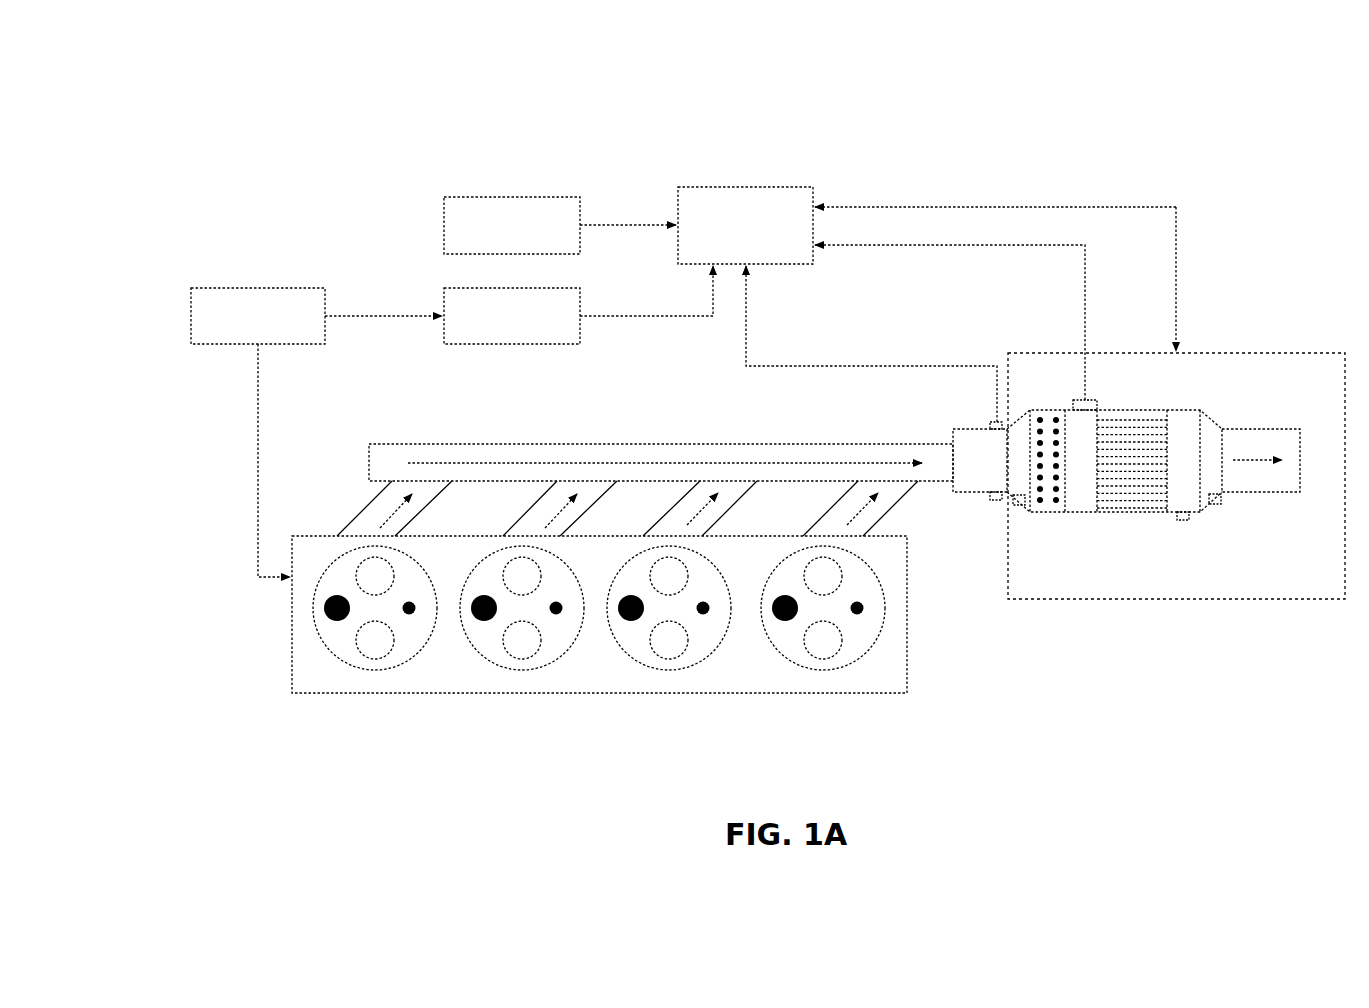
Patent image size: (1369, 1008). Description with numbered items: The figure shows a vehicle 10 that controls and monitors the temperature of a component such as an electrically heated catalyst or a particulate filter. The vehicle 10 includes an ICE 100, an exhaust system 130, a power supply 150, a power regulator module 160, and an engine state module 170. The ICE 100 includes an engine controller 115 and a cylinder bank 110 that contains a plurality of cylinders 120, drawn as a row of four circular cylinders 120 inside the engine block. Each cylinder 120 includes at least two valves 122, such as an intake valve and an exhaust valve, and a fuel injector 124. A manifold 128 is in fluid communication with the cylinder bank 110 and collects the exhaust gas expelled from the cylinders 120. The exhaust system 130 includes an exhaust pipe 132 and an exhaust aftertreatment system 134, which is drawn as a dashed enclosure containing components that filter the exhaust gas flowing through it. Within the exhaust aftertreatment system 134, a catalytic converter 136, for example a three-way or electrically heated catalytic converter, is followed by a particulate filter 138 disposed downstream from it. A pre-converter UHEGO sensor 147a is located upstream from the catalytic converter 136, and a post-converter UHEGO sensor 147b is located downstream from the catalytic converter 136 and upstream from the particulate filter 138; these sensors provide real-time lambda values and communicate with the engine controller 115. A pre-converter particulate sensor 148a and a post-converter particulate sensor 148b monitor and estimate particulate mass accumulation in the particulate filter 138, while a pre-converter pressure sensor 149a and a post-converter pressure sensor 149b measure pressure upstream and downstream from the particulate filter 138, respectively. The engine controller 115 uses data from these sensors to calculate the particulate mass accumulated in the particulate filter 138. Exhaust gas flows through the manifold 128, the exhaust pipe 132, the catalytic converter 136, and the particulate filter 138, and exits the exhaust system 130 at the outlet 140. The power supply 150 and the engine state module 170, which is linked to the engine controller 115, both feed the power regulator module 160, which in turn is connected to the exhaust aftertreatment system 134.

The vehicle 10 is at (1182, 128).
The ICE 100 is at (295, 715).
The cylinder bank 110 is at (276, 617).
The engine controller 115 is at (220, 288).
The cylinder 120 is at (463, 640).
The valves 122 is at (520, 592).
The fuel injector 124 is at (483, 612).
The manifold 128 is at (518, 443).
The exhaust system 130 is at (965, 351).
The exhaust pipe 132 is at (968, 492).
The exhaust aftertreatment system 134 is at (1245, 355).
The catalytic converter 136 is at (1055, 513).
The particulate filter 138 is at (1125, 514).
The outlet 140 is at (1250, 428).
The pre-converter UHEGO sensor 147a is at (990, 421).
The post-converter UHEGO sensor 147b is at (1078, 398).
The pre-converter particulate sensor 148a is at (998, 503).
The post-converter particulate sensor 148b is at (1185, 522).
The pre-converter pressure sensor 149a is at (1020, 508).
The post-converter pressure sensor 149b is at (1220, 506).
The power supply 150 is at (580, 203).
The power regulator module 160 is at (813, 192).
The engine state module 170 is at (580, 294).